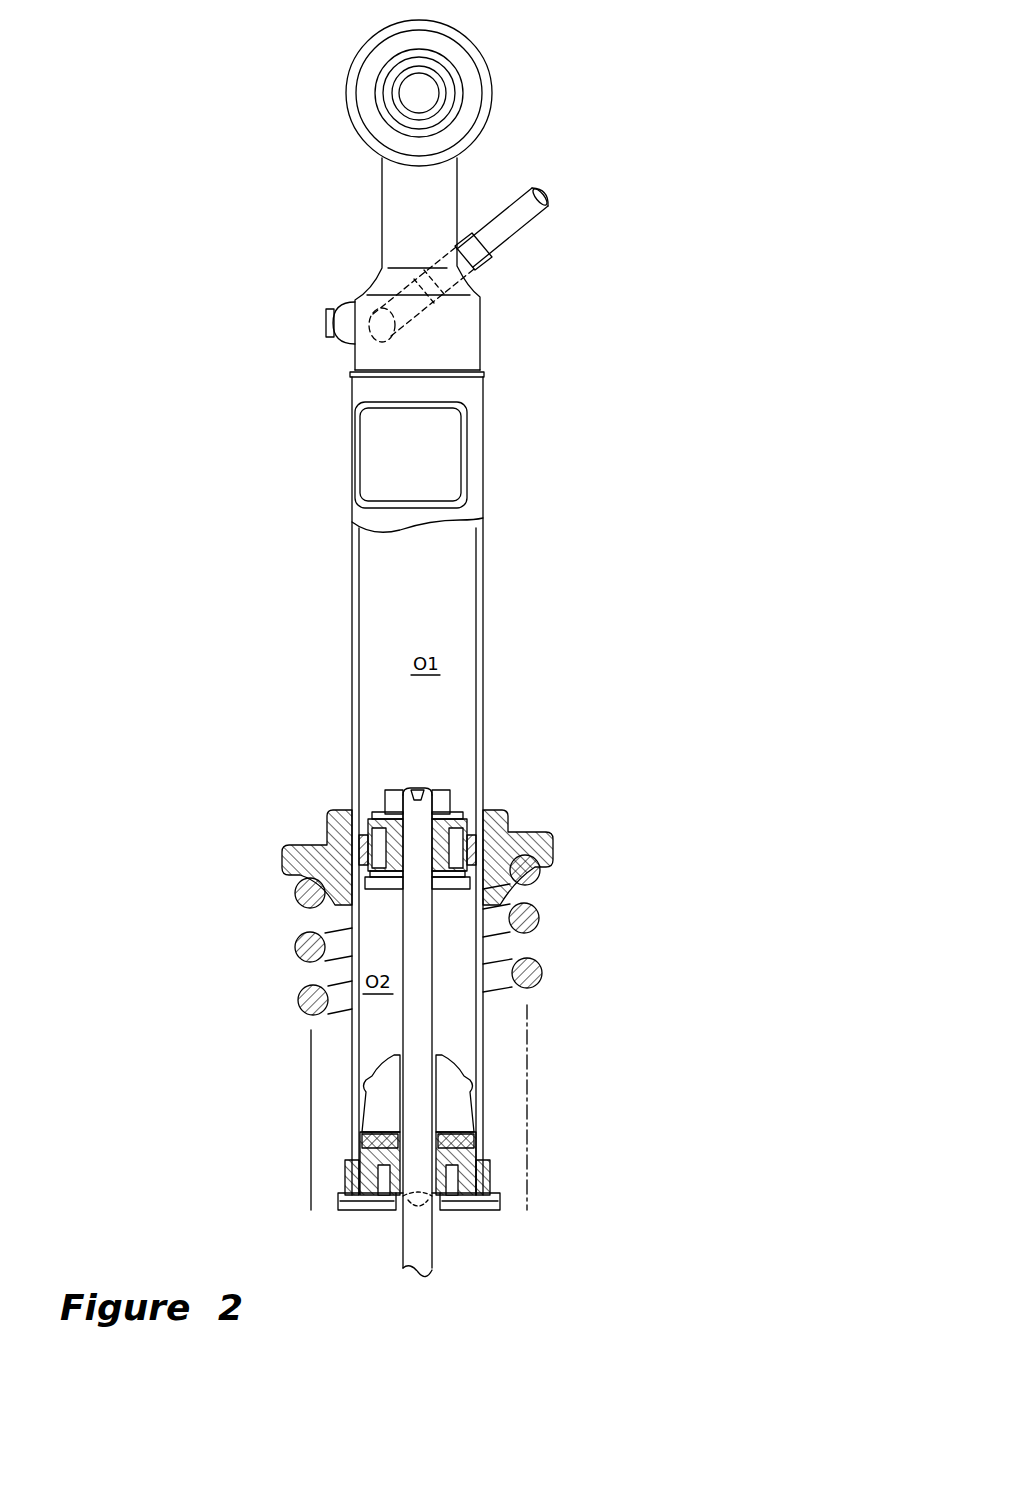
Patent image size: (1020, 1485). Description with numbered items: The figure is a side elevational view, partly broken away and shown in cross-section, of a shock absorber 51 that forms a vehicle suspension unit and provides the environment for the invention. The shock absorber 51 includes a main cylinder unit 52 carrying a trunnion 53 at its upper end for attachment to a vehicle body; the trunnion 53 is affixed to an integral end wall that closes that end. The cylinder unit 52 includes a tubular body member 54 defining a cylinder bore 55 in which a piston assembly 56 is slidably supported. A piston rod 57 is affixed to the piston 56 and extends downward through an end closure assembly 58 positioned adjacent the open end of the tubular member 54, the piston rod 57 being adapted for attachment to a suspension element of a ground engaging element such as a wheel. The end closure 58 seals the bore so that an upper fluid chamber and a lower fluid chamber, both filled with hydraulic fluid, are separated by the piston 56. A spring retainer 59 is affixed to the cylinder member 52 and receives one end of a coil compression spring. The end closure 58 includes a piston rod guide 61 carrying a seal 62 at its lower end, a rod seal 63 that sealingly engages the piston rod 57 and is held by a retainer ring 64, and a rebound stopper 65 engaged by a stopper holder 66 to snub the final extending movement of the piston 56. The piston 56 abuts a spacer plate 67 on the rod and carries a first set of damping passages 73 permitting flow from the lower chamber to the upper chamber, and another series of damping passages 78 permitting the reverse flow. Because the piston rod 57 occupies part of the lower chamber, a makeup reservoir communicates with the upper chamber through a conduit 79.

The shock absorber 51 is at (580, 80).
The main cylinder unit 52 is at (447, 618).
The trunnion 53 is at (413, 95).
The tubular body member 54 is at (352, 720).
The cylinder bore 55 is at (365, 645).
The piston assembly 56 is at (456, 814).
The piston rod 57 is at (410, 1240).
The end closure assembly 58 is at (484, 1212).
The spring retainer 59 is at (330, 852).
The piston rod guide 61 is at (545, 910).
The seal 62 is at (345, 1190).
The rod seal 63 is at (477, 1140).
The retainer ring 64 is at (375, 1122).
The rebound stopper 65 is at (458, 1105).
The stopper holder 66 is at (392, 1070).
The spacer plate 67 is at (452, 878).
The first set of damping passages 73 is at (475, 852).
The damping passages 78 is at (378, 872).
The conduit 79 is at (512, 232).